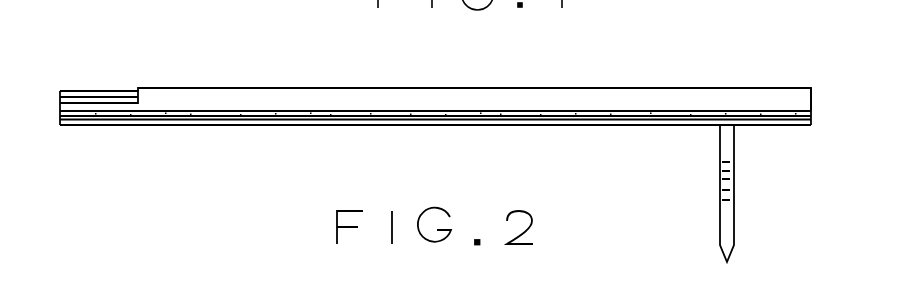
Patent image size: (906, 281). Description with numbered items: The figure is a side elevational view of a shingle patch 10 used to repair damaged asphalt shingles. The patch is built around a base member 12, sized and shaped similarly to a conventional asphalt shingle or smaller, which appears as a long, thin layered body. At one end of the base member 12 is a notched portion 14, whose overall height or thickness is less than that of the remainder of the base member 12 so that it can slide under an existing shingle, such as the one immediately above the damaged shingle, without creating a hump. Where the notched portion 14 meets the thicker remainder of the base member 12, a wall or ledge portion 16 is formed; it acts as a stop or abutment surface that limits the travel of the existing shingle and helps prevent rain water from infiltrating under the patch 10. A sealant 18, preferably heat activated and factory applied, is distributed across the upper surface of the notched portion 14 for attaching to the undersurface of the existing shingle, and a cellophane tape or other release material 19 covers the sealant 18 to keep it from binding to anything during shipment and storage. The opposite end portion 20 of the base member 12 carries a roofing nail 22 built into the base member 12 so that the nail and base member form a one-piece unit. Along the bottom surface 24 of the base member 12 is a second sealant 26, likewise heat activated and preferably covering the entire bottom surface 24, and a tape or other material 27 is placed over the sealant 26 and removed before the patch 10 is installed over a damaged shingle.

The shingle patch 10 is at (644, 56).
The base member 12 is at (418, 88).
The notched portion 14 is at (60, 110).
The wall or ledge portion 16 is at (137, 88).
The sealant 18 is at (60, 104).
The release tape 19 is at (93, 91).
The opposite end portion 20 is at (811, 98).
The roofing nail 22 is at (734, 205).
The bottom surface 24 is at (233, 111).
The sealant 26 is at (812, 117).
The release tape 27 is at (478, 122).